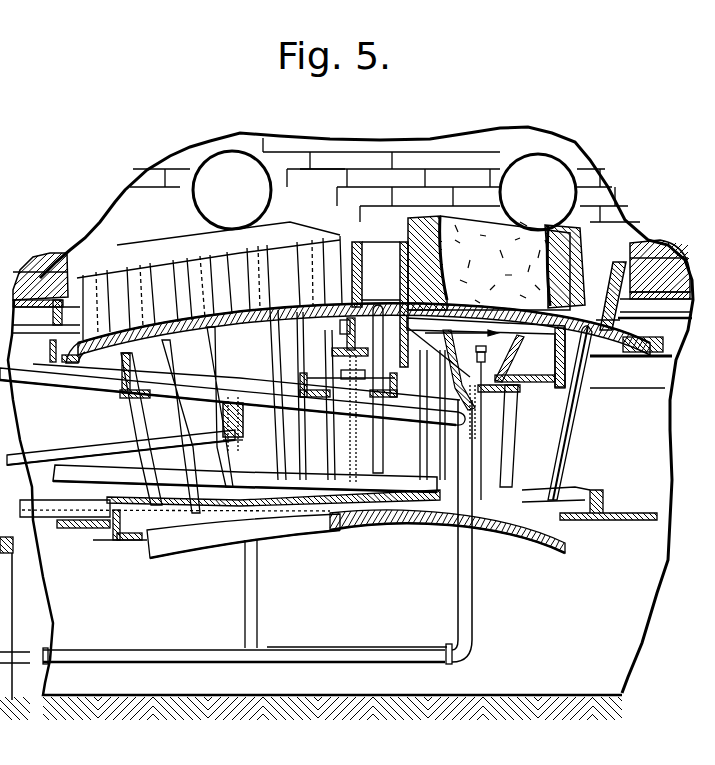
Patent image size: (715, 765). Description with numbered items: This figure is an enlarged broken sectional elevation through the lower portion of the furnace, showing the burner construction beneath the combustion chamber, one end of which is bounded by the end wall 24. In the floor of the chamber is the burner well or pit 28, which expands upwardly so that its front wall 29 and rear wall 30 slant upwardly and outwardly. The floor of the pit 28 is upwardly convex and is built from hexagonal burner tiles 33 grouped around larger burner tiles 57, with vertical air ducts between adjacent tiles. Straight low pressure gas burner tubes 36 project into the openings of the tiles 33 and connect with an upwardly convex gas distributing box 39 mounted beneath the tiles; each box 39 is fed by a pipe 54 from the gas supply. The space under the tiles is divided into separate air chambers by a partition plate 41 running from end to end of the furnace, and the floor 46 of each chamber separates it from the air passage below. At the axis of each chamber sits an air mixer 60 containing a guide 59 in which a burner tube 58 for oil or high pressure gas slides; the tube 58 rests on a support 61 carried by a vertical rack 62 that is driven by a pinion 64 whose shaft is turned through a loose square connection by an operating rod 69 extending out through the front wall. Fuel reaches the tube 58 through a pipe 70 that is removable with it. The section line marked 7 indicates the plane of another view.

The end wall 24 is at (470, 150).
The burner well or pit 28 is at (328, 182).
The front wall of the pit 29 is at (47, 272).
The rear wall of the pit 30 is at (660, 268).
The burner tiles 33 is at (93, 277).
The straight gas burner tubes 36 is at (137, 428).
The gas distributing box 39 is at (185, 540).
The partition plate 41 is at (358, 440).
The floor of the air chamber 46 is at (575, 487).
The pipe 54 is at (95, 657).
The larger burner tiles 57 is at (163, 246).
The burner tube 58 is at (488, 350).
The guide 59 is at (502, 395).
The air mixer 60 is at (457, 355).
The support 61 is at (548, 453).
The vertical rack 62 is at (233, 447).
The pinion 64 is at (212, 400).
The operating rod 69 is at (47, 452).
The fuel supply pipe 70 is at (37, 375).
The section line 7- 7 is at (428, 518).